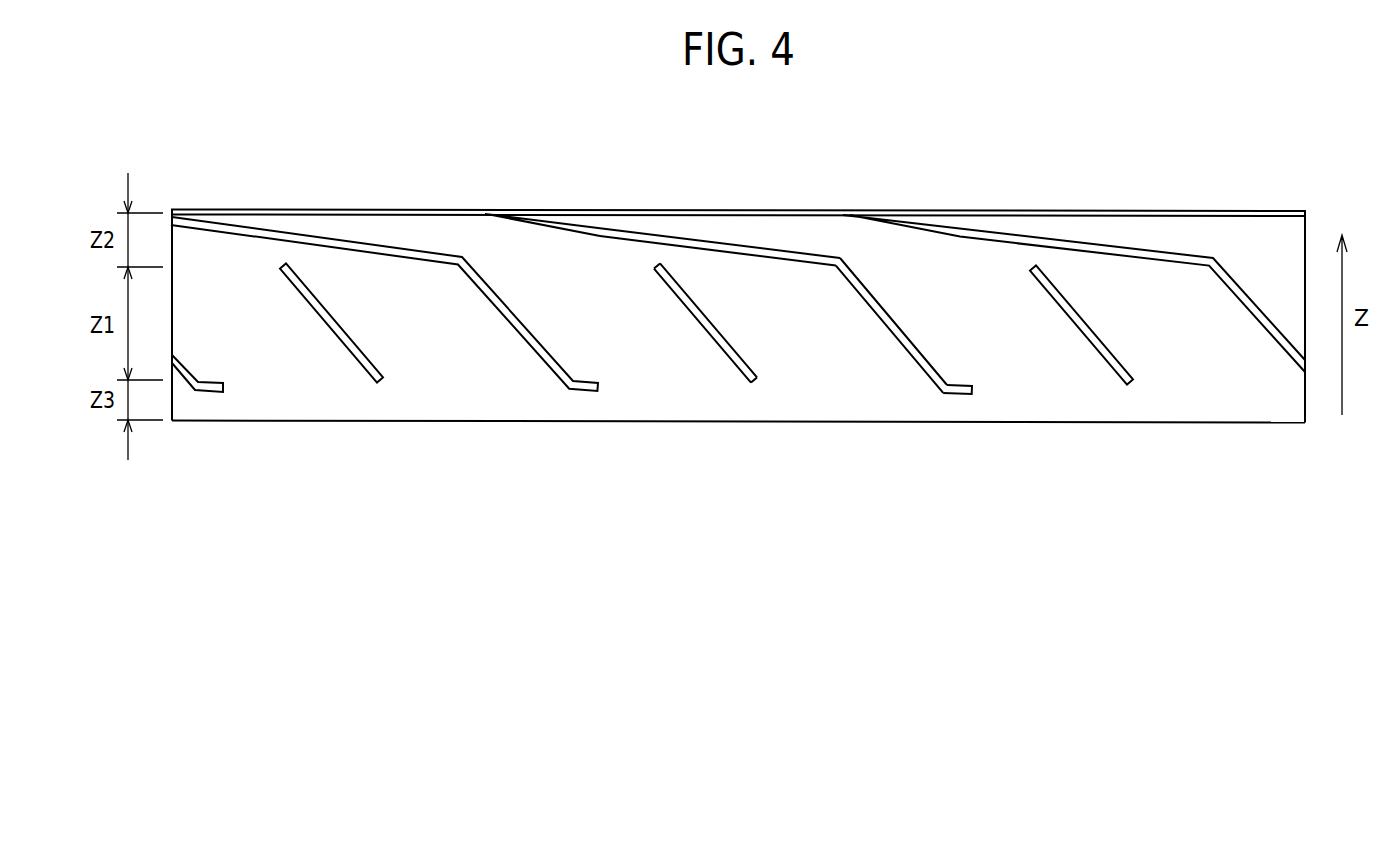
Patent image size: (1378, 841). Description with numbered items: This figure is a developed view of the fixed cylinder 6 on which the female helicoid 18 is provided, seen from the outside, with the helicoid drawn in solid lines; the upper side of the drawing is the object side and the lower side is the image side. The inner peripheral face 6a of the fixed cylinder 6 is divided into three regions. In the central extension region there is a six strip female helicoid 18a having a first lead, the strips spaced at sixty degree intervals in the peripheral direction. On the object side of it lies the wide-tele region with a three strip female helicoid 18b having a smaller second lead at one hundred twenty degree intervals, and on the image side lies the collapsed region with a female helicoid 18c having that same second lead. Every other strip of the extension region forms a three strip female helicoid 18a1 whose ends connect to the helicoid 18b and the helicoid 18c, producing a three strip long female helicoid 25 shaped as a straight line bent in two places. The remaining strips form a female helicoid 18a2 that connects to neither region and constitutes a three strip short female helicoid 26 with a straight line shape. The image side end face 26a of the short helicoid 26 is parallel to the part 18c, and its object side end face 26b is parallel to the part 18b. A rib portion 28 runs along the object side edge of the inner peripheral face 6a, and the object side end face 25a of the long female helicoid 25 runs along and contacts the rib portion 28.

The fixed cylinder 6 is at (1275, 442).
The inner peripheral face 6a is at (1182, 424).
The female helicoid 18 is at (738, 330).
The six strip female helicoid 18a is at (760, 381).
The three strip female helicoid 18a1 is at (891, 325).
The female helicoid 18a2 is at (689, 367).
The three strip female helicoid 18b is at (652, 204).
The female helicoid 18c is at (958, 393).
The long female helicoid 25 is at (891, 325).
The object side end face 25a is at (507, 213).
The short female helicoid 26 is at (689, 367).
The image side end face 26a is at (757, 381).
The object side end face 26b is at (655, 267).
The rib portion 28 is at (1158, 213).